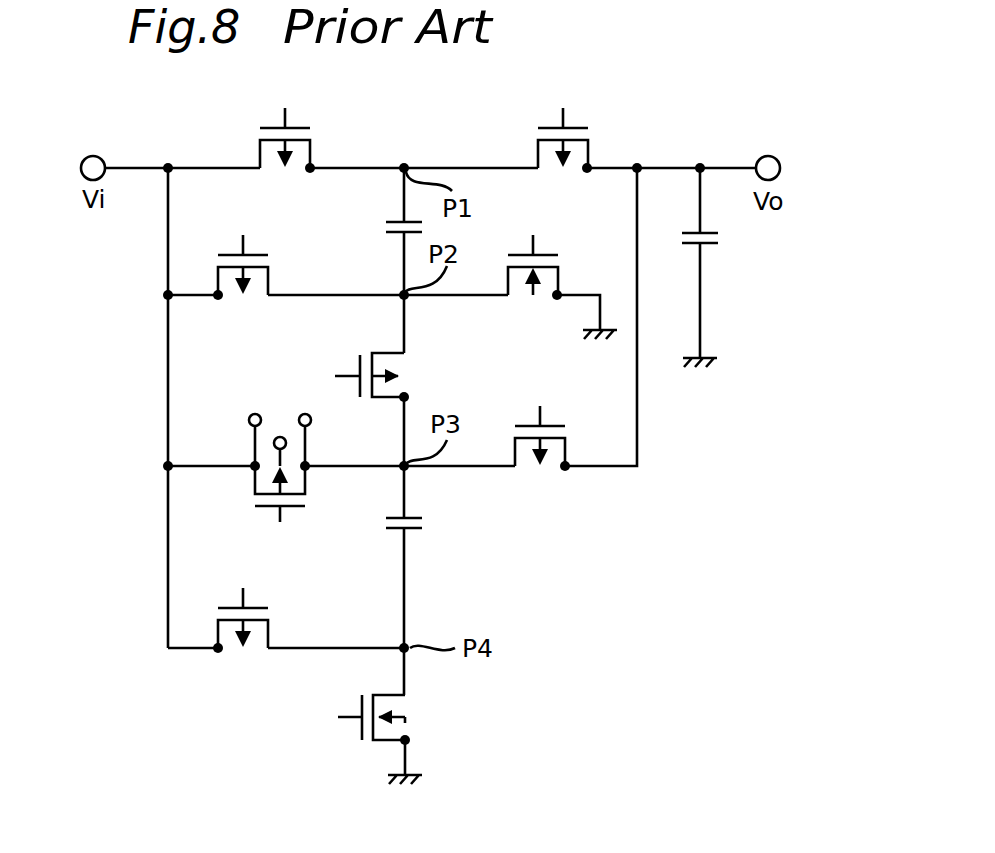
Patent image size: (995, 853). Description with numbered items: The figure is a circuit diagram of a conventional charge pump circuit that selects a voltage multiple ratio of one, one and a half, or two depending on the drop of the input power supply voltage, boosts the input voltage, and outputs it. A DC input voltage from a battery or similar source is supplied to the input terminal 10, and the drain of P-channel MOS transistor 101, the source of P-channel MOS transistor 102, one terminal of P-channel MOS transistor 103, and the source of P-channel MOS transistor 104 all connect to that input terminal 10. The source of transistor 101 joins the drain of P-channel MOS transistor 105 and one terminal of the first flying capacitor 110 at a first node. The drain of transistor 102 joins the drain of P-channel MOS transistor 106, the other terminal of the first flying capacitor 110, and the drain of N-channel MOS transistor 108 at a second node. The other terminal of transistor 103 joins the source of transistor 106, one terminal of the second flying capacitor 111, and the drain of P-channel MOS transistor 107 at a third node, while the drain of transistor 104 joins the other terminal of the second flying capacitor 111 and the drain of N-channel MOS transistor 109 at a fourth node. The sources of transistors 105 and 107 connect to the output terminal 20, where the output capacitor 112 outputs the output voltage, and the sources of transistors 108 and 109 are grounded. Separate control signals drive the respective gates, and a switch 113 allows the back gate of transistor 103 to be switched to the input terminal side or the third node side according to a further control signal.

The input terminal 10 is at (93, 156).
The output terminal 20 is at (767, 156).
The P-channel MOS transistor 101 is at (312, 152).
The P-channel MOS transistor 102 is at (220, 298).
The P-channel MOS transistor 103 is at (293, 507).
The P-channel MOS transistor 104 is at (255, 643).
The P-channel MOS transistor 105 is at (536, 140).
The P-channel MOS transistor 106 is at (410, 375).
The P-channel MOS transistor 107 is at (528, 468).
The N-channel MOS transistor 108 is at (527, 297).
The N-channel MOS transistor 109 is at (407, 705).
The first flying capacitor 110 is at (385, 227).
The second flying capacitor 111 is at (424, 523).
The output capacitor 112 is at (720, 237).
The switch 113 is at (275, 413).